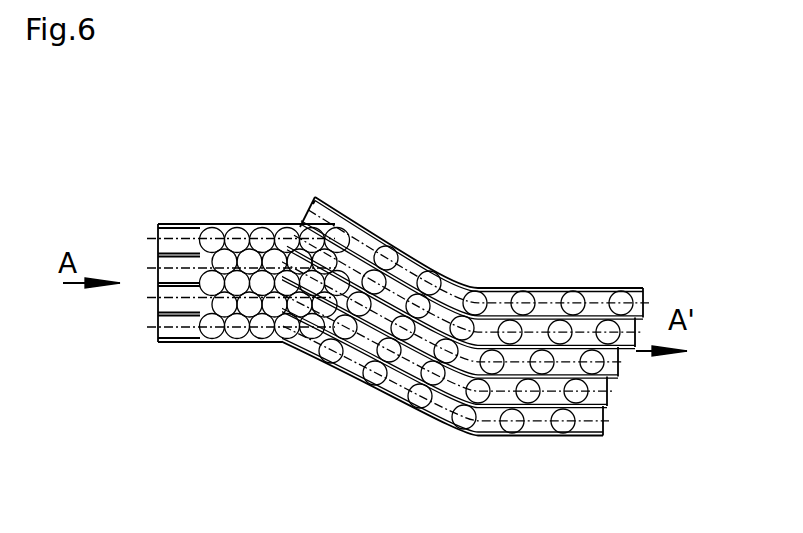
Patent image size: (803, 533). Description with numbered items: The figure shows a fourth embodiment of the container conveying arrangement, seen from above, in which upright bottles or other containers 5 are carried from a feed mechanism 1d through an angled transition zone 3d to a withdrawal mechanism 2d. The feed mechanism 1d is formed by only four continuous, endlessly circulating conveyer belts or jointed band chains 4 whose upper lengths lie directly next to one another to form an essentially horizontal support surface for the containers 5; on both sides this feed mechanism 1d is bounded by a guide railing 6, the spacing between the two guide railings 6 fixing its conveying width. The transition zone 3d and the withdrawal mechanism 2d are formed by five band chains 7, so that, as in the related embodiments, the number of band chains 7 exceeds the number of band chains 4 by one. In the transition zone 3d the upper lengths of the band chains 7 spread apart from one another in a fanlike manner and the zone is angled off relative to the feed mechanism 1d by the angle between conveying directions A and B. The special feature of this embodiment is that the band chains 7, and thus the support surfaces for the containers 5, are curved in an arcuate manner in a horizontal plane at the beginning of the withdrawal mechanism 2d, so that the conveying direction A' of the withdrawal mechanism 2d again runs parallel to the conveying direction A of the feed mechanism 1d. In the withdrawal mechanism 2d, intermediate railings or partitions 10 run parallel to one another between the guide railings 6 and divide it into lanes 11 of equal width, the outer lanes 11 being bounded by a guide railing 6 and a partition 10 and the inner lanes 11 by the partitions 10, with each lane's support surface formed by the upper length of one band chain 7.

The feed mechanism 1d is at (199, 190).
The withdrawal mechanism 2d is at (580, 228).
The transition zone 3d is at (391, 203).
The band chains 4 is at (160, 265).
The containers 5 is at (242, 230).
The guide railing 6 is at (292, 222).
The band chains 7 is at (547, 297).
The partitions 10 is at (462, 288).
The lanes 11 is at (655, 295).